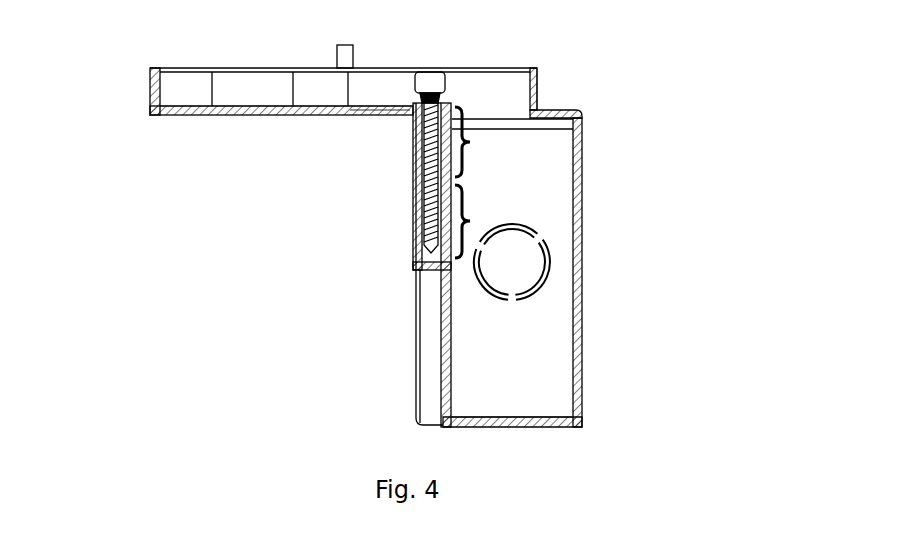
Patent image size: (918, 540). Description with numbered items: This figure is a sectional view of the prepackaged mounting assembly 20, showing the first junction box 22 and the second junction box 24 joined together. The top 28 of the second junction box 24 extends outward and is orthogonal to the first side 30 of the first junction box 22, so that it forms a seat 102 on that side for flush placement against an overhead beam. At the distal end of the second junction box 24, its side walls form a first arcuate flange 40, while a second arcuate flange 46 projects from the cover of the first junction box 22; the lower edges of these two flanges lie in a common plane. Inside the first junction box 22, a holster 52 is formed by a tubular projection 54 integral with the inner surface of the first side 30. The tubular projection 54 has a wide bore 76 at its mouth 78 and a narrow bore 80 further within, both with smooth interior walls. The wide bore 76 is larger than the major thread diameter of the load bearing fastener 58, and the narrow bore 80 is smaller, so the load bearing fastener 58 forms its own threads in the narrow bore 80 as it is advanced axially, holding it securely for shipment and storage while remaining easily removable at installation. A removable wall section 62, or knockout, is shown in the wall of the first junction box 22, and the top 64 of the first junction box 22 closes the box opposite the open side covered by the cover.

The prepackaged mounting assembly 20 is at (701, 164).
The first junction box 22 is at (638, 271).
The second junction box 24 is at (279, 146).
The top 28 is at (327, 113).
The first side 30 is at (400, 353).
The first arcuate flange 40 is at (152, 92).
The second arcuate flange 46 is at (537, 85).
The holster 52 is at (440, 104).
The tubular projection 54 is at (414, 195).
The load bearing fastener 58 is at (430, 71).
The removable wall section 62 is at (512, 262).
The top 64 is at (553, 443).
The wide bore 76 is at (478, 142).
The mouth 78 is at (417, 103).
The narrow bore 80 is at (478, 221).
The seat 102 is at (367, 134).